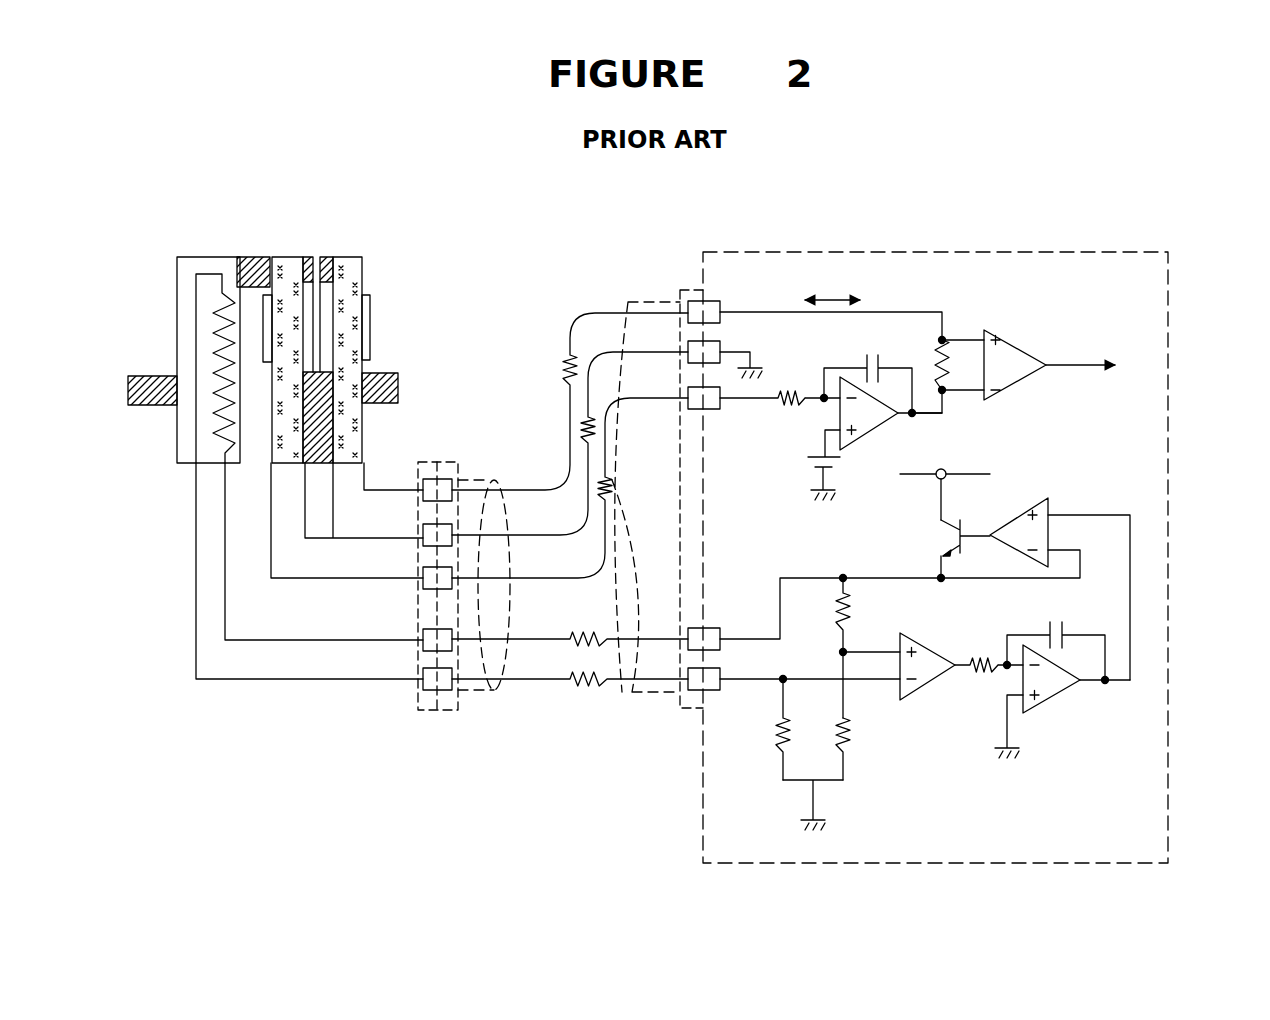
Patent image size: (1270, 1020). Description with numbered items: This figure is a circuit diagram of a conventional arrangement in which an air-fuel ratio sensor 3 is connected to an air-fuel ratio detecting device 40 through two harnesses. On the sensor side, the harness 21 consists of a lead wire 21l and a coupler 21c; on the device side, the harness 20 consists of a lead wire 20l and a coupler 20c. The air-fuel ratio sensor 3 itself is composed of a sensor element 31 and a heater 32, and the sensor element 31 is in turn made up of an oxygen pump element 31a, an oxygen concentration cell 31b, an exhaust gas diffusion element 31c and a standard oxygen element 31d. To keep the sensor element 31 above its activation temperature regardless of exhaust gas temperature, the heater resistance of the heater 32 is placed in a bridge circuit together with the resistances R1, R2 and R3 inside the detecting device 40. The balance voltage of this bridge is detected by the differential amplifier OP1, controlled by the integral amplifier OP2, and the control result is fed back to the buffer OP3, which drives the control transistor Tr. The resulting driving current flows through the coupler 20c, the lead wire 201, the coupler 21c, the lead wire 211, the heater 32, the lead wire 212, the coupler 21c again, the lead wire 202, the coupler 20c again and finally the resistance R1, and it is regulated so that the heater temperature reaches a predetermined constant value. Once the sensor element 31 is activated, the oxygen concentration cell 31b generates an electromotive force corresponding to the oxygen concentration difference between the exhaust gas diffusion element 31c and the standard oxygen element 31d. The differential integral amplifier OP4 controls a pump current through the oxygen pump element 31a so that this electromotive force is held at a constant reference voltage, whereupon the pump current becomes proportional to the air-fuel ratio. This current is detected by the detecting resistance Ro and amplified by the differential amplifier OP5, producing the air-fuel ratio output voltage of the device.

The air-fuel ratio sensor 3 is at (148, 305).
The sensor element 31 is at (440, 200).
The oxygen pump element 31a is at (350, 262).
The oxygen concentration cell 31b is at (290, 266).
The exhaust gas diffusion element 31c is at (320, 262).
The standard oxygen element 31d is at (245, 300).
The heater 32 is at (192, 262).
The harness on the sensor side 21 is at (420, 748).
The lead wire 21l is at (330, 731).
The lead wire 211 is at (264, 640).
The lead wire 212 is at (264, 679).
The coupler 21c is at (425, 706).
The harness on the air-fuel ratio detecting device side 20 is at (680, 750).
The lead wire 20l is at (605, 732).
The lead wire 201 is at (588, 628).
The lead wire 202 is at (585, 668).
The coupler 20c is at (462, 704).
The air-fuel ratio detecting device 40 is at (1172, 782).
The detecting resistance Ro is at (957, 389).
The differential amplifier OP1 is at (961, 681).
The integral amplifier OP2 is at (1062, 690).
The buffer OP3 is at (1035, 573).
The differential integral amplifier OP4 is at (883, 416).
The differential amplifier OP5 is at (1049, 381).
The control transistor Tr is at (950, 536).
The resistance R1 is at (777, 728).
The resistance R2 is at (851, 620).
The resistance R3 is at (851, 742).